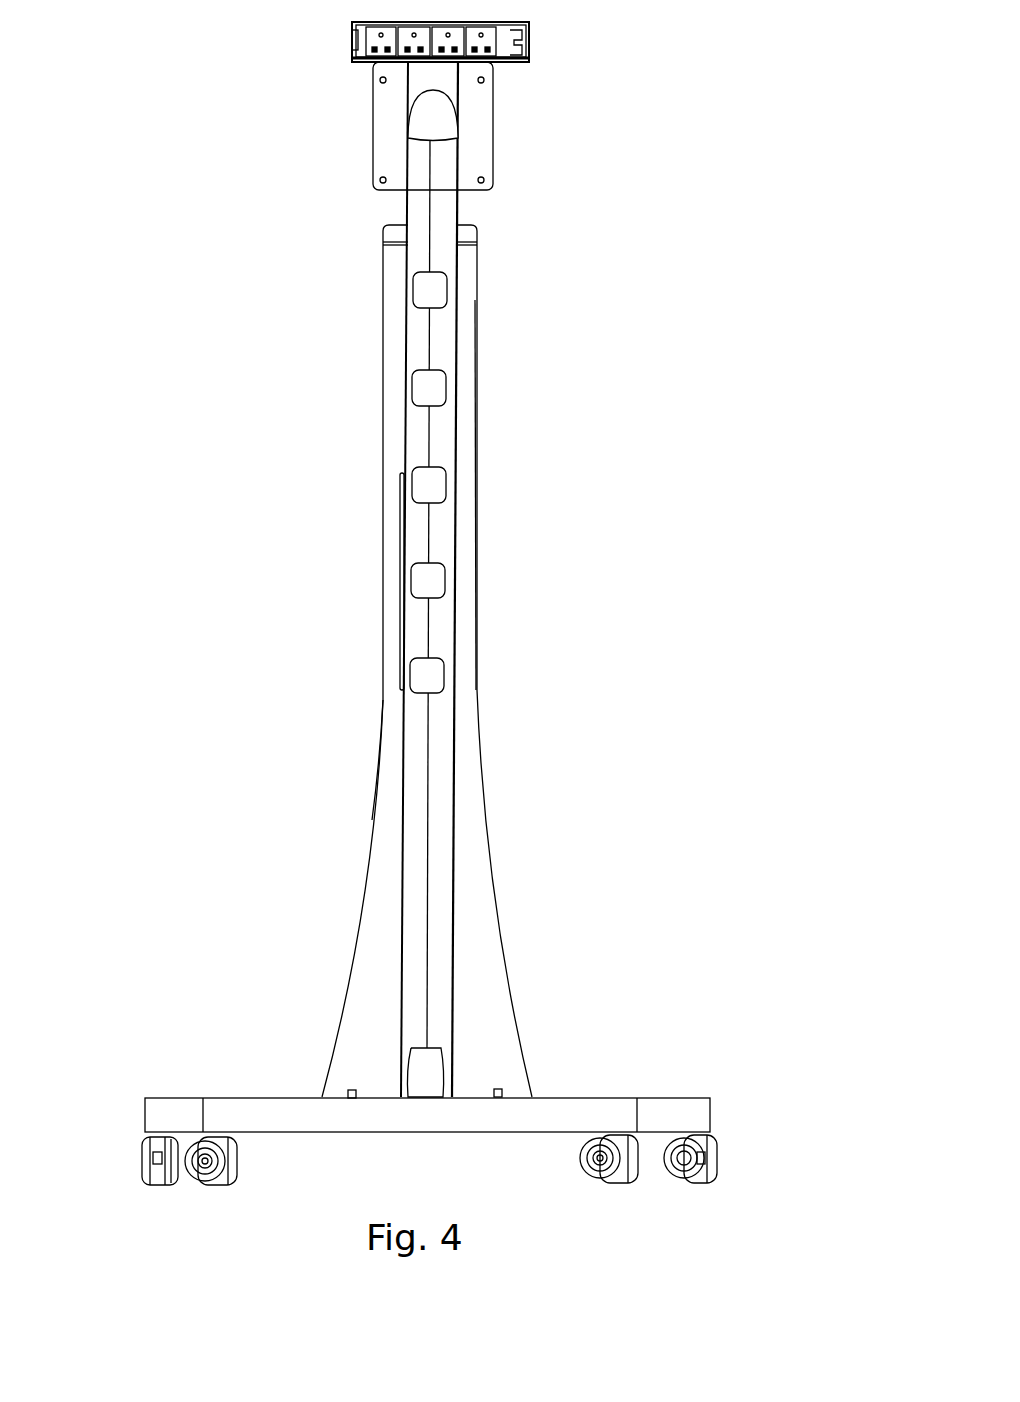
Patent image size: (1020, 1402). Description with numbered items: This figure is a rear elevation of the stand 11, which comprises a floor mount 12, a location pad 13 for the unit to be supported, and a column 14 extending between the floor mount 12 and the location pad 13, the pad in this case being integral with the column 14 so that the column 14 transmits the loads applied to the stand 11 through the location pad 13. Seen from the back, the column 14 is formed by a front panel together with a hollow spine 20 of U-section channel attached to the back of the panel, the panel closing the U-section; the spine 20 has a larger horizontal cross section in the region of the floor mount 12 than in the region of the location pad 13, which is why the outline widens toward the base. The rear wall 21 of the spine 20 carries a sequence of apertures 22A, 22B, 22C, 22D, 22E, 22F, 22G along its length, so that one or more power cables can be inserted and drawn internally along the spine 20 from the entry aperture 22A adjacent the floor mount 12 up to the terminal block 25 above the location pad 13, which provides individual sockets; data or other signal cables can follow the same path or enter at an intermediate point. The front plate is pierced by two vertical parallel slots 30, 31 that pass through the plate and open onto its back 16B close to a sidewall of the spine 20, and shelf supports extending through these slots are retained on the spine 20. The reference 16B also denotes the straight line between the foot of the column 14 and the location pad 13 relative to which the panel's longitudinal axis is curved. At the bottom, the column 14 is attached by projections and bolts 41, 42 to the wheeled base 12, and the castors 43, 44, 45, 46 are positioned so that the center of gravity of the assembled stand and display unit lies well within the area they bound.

The terminal block 25 is at (505, 25).
The location pad 13 is at (495, 113).
The aperture 22G is at (415, 118).
The aperture 22F is at (412, 290).
The aperture 22E is at (412, 382).
The aperture 22D is at (420, 483).
The aperture 22C is at (420, 571).
The aperture 22B is at (398, 677).
The entry aperture 22A is at (420, 1060).
The column 14 is at (463, 312).
The stand 11 is at (470, 478).
The slot 30 is at (398, 522).
The slot 31 is at (458, 516).
The rear wall 21 is at (450, 620).
The hollow spine 20 is at (443, 872).
The back of the plate 16B is at (388, 702).
The floor mount 12 is at (552, 1097).
The bolt 42 is at (345, 1098).
The bolt 41 is at (497, 1090).
The castor 44 is at (145, 1160).
The castor 43 is at (237, 1165).
The castor 46 is at (587, 1160).
The castor 45 is at (720, 1163).